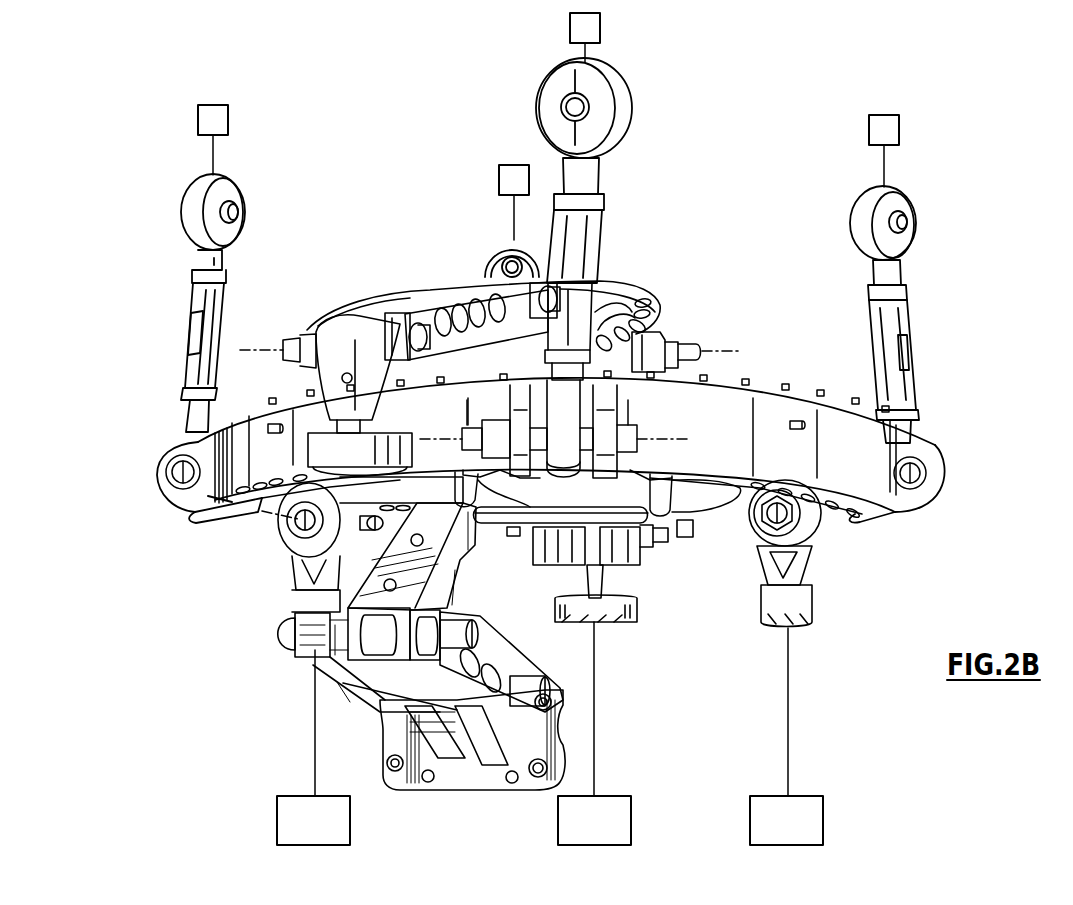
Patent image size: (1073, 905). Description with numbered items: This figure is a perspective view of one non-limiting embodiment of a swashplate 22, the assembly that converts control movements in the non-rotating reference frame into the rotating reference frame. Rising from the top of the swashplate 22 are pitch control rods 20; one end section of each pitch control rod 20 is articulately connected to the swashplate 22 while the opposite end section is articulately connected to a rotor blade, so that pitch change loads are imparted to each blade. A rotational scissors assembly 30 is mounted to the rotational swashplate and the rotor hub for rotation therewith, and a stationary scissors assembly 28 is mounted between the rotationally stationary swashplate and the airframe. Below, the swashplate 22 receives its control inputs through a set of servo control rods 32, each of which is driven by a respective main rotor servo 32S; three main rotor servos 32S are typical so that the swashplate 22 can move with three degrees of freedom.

The pitch control rod 20 is at (212, 307).
The swashplate 22 is at (997, 482).
The stationary scissors assembly 28 is at (454, 750).
The rotational scissors assembly 30 is at (655, 305).
The servo control rod 32 is at (315, 735).
The main rotor servo 32S is at (350, 823).